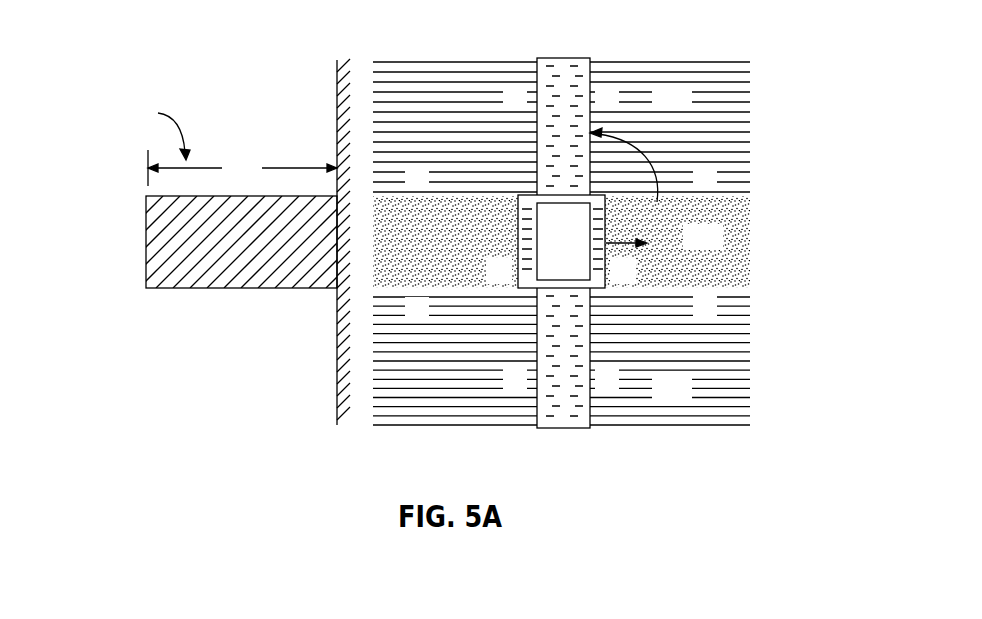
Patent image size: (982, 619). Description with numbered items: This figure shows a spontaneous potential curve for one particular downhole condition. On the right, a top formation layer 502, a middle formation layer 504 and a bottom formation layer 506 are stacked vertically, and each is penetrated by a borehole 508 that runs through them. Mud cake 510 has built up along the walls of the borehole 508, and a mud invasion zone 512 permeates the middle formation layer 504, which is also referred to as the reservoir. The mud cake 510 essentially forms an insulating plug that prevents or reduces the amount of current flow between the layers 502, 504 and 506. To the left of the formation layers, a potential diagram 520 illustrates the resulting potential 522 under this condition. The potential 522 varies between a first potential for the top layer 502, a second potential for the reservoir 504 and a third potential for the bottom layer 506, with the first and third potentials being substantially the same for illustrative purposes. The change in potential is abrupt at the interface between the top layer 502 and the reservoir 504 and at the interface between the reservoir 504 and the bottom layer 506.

The top formation layer 502 is at (730, 100).
The middle formation layer 504 is at (735, 244).
The bottom formation layer 506 is at (730, 340).
The borehole 508 is at (567, 72).
The mud cake 510 is at (600, 219).
The mud invasion zone 512 is at (518, 245).
The potential diagram 520 is at (190, 40).
The resulting potential 522 is at (150, 222).